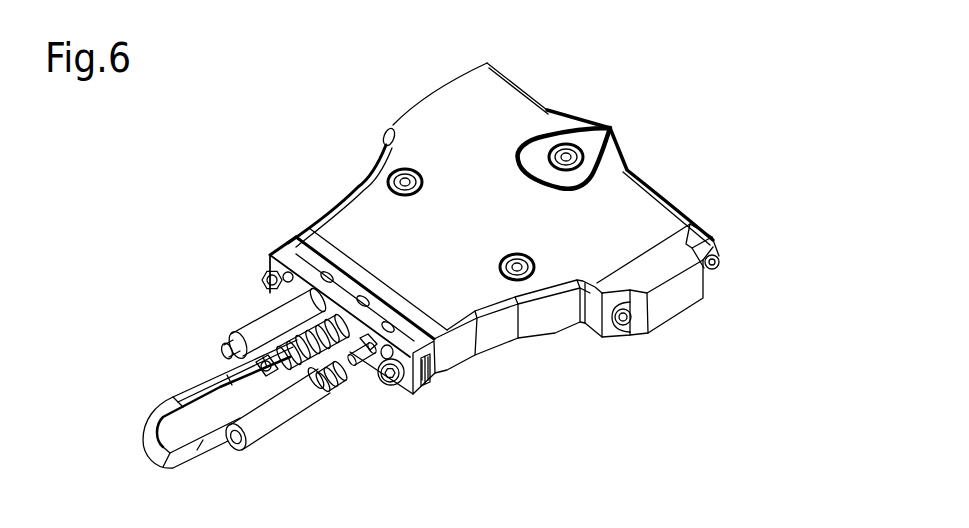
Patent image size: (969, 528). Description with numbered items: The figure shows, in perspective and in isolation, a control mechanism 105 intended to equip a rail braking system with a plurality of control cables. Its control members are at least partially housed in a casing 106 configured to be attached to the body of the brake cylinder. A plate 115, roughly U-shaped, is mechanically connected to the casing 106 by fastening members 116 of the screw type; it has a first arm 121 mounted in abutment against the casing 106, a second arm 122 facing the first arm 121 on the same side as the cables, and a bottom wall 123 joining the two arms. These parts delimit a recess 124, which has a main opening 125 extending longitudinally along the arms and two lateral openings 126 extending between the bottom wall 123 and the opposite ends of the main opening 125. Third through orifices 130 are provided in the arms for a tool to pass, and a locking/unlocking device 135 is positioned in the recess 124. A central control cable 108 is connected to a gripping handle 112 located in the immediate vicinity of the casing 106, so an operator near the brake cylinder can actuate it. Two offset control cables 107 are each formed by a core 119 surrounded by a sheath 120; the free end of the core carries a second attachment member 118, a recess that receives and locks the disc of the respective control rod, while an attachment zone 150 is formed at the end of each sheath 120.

The control mechanism 105 is at (337, 90).
The casing 106 is at (483, 216).
The offset control cable 107 is at (265, 314).
The central control cable 108 is at (304, 382).
The gripping handle 112 is at (138, 440).
The plate 115 is at (268, 260).
The fastening member 116 is at (262, 274).
The second attachment member 118 is at (358, 377).
The core 119 is at (223, 350).
The sheath 120 is at (245, 330).
The first arm 121 is at (437, 360).
The second arm 122 is at (420, 387).
The bottom wall 123 is at (428, 373).
The recess 124 is at (351, 273).
The main opening 125 is at (383, 292).
The lateral opening 126 is at (272, 255).
The third through orifice 130 is at (262, 279).
The locking/unlocking device 135 is at (283, 228).
The attachment zone 150 is at (338, 402).